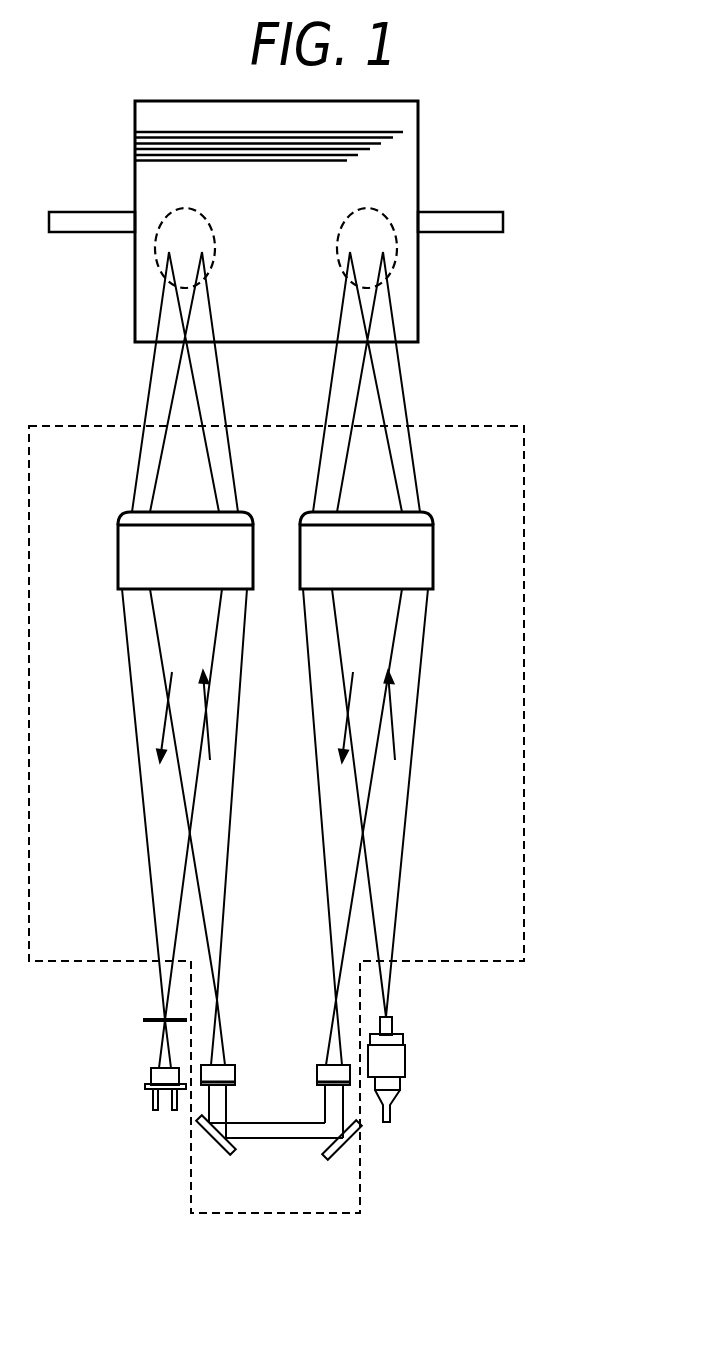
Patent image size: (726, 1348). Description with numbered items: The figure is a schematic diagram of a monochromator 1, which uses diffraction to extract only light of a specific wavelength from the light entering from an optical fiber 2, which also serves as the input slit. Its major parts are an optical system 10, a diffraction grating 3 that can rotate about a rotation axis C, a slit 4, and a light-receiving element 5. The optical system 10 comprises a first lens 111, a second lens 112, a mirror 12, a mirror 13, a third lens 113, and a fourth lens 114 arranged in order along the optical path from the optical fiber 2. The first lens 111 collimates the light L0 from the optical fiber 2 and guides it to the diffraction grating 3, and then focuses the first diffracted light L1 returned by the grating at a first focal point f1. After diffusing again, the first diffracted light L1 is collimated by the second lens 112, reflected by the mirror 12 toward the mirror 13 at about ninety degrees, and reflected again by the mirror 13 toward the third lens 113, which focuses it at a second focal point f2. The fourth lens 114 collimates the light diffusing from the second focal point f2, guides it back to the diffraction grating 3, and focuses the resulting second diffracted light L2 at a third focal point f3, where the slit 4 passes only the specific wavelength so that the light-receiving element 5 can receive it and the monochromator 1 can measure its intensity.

The monochromator 1 is at (93, 1274).
The optical fiber 2 is at (407, 1055).
The diffraction grating 3 is at (392, 178).
The slit 4 is at (153, 1026).
The light-receiving element 5 is at (152, 1070).
The optical system 10 is at (523, 656).
The mirror 12 is at (323, 1150).
The mirror 13 is at (207, 1143).
The first lens 111 is at (435, 555).
The second lens 112 is at (317, 1073).
The third lens 113 is at (235, 1073).
The fourth lens 114 is at (120, 552).
The rotation axis C is at (492, 220).
The light L0 is at (408, 793).
The first diffracted light L1 is at (332, 380).
The second diffracted light L2 is at (152, 380).
The first focal point f1 is at (337, 1000).
The second focal point f2 is at (217, 1000).
The third focal point f3 is at (162, 1018).